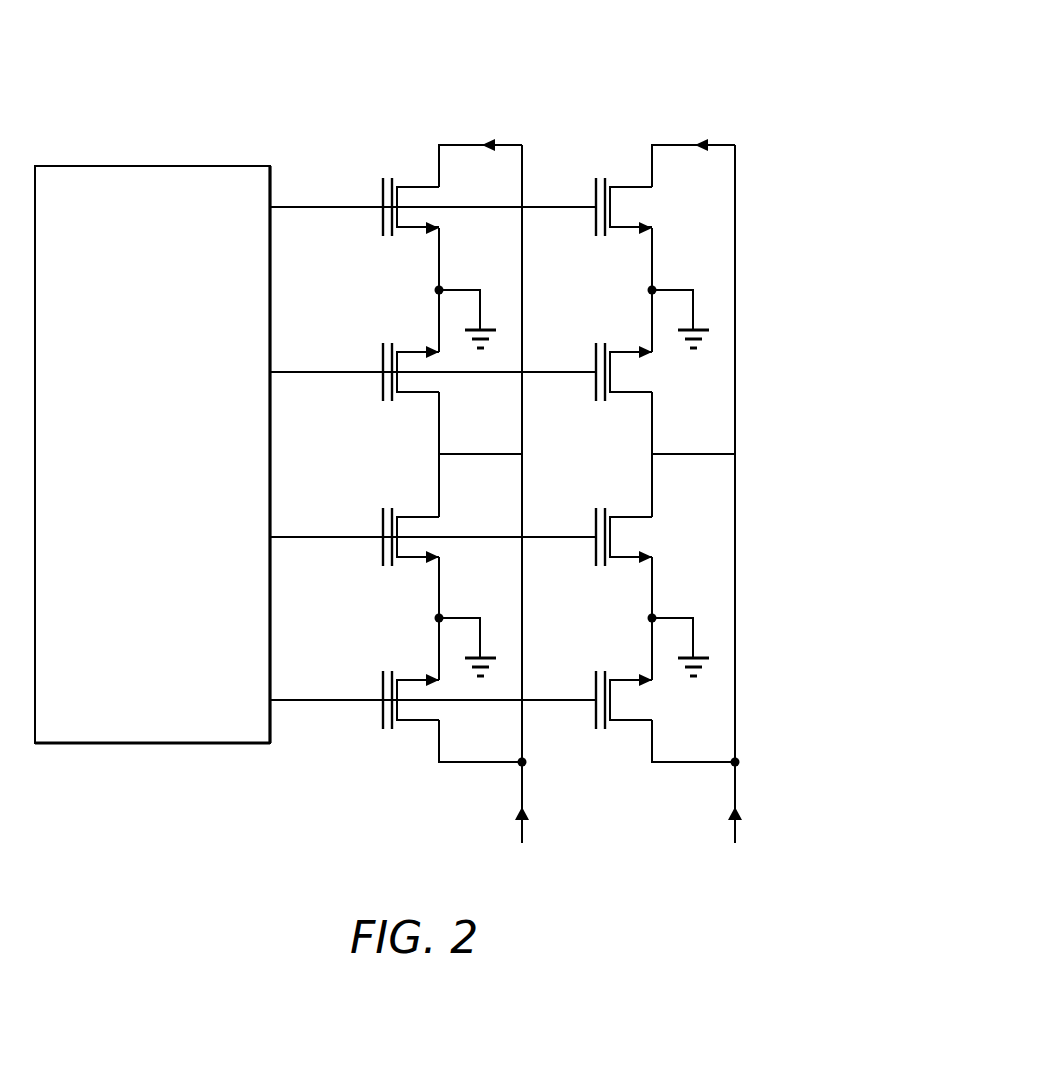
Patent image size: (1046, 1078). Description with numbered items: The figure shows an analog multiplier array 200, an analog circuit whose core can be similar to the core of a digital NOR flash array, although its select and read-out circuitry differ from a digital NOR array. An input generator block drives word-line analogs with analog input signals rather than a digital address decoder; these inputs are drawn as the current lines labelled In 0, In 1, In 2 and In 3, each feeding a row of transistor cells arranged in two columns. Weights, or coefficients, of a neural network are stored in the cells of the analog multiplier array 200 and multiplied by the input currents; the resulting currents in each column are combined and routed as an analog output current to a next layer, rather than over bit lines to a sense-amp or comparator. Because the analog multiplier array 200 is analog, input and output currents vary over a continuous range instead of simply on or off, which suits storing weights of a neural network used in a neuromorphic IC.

The analog multiplier array 200 is at (398, 444).
The input current line I_In0 0 is at (433, 192).
The input current line I_In1 1 is at (433, 357).
The input current line I_In2 2 is at (433, 522).
The input current line I_In3 3 is at (433, 685).